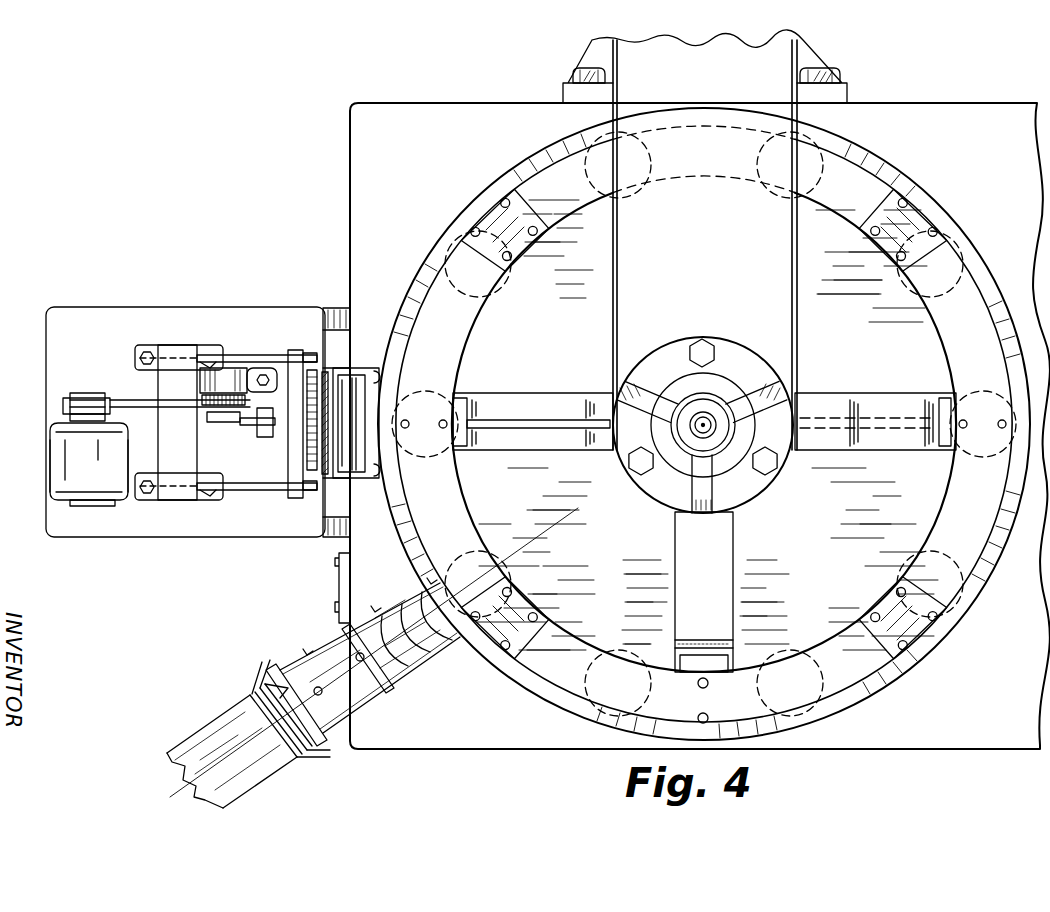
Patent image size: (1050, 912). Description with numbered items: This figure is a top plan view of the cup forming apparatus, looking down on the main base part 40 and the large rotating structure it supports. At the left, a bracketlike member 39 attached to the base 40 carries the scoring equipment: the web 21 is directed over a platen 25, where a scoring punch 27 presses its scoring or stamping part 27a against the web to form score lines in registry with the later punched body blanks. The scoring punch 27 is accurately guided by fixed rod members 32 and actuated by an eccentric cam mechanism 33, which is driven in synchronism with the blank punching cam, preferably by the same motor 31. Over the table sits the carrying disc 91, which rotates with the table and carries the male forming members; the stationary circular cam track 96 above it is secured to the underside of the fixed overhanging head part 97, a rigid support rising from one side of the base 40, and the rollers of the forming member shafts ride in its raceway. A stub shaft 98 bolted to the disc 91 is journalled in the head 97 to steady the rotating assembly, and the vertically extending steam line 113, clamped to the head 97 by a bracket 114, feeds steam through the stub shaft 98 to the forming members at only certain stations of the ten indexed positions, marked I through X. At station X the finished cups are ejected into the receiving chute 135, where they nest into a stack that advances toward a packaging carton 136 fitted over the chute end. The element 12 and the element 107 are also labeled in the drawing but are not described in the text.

The workpiece feed path 12 is at (591, 521).
The web 21 is at (350, 388).
The platen 25 is at (320, 369).
The scoring punch 27 is at (298, 376).
The scoring or stamping part 27a is at (306, 442).
The motor 31 is at (62, 456).
The fixed rod members 32 is at (240, 355).
The eccentric cam mechanism 33 is at (218, 416).
The bracketlike member 39 is at (112, 322).
The main base part 40 is at (413, 93).
The carrying disc 91 is at (479, 198).
The stationary circular cam track 96 is at (544, 170).
The fixed overhanging head part 97 is at (782, 342).
The stub shaft 98 is at (690, 387).
The segment plate 107 is at (538, 220).
The steam line 113 is at (706, 416).
The bracket 114 is at (731, 427).
The receiving chute 135 is at (416, 654).
The packaging carton 136 is at (216, 730).